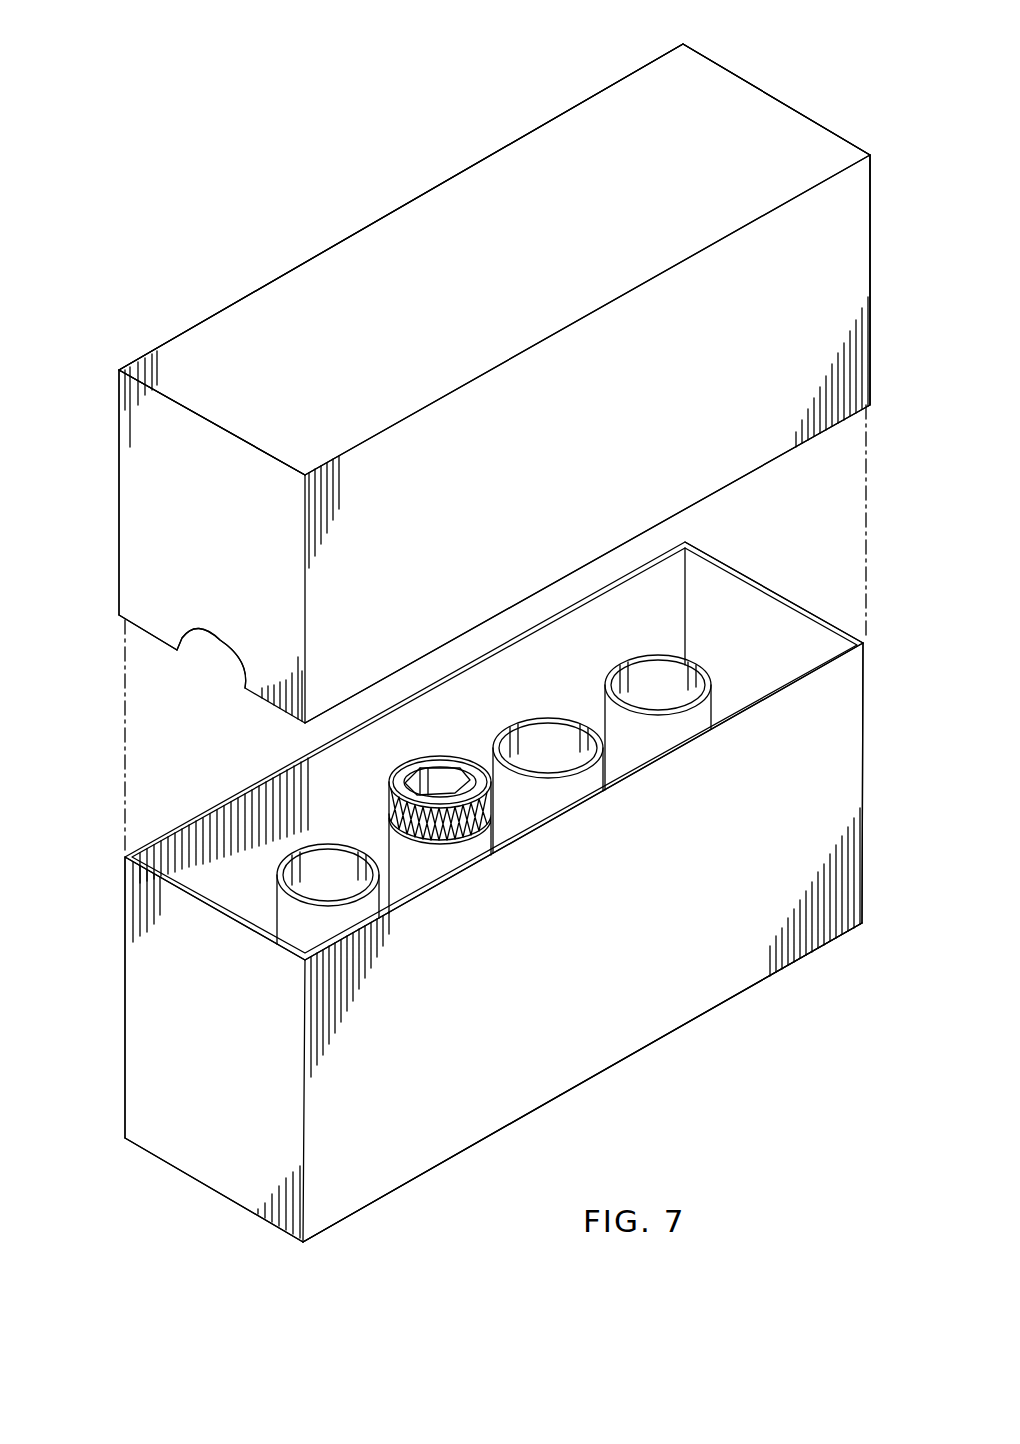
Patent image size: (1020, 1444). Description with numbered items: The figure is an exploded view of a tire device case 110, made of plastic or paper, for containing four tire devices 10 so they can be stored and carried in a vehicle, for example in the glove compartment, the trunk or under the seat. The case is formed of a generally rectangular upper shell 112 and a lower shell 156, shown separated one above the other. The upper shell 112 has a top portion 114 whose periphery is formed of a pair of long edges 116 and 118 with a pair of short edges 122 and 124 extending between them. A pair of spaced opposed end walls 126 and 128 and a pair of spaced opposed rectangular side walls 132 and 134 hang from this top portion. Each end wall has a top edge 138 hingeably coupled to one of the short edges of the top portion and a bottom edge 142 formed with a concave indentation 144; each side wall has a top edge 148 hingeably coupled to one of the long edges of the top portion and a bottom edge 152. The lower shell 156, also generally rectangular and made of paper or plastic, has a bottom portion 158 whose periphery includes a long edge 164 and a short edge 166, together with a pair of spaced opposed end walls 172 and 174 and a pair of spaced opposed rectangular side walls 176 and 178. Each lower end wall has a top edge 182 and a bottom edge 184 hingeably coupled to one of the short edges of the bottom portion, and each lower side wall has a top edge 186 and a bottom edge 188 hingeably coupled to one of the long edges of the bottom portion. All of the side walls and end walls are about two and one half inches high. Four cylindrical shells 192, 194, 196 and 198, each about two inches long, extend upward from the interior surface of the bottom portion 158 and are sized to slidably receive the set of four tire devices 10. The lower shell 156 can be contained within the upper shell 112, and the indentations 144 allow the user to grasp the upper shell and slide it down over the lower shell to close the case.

The tire device 10 is at (458, 754).
The tire device case 110 is at (405, 132).
The upper shell 112 is at (119, 463).
The top portion 114 is at (327, 305).
The long edge 116 is at (500, 158).
The long edge 118 is at (485, 372).
The short edge 122 is at (212, 420).
The short edge 124 is at (755, 87).
The end wall 126 is at (155, 555).
The end wall 128 is at (870, 226).
The side wall 132 is at (572, 108).
The side wall 134 is at (840, 287).
The top edge 138 is at (168, 400).
The bottom edge 142 is at (147, 645).
The concave indentation 144 is at (221, 641).
The top edge 148 is at (680, 292).
The bottom edge 152 is at (480, 620).
The lower shell 156 is at (860, 687).
The bottom portion 158 is at (433, 1172).
The long edge 164 is at (720, 1007).
The short edge 166 is at (213, 1192).
The end wall 172 is at (162, 1055).
The end wall 174 is at (812, 633).
The side wall 176 is at (670, 567).
The side wall 178 is at (823, 785).
The top edge 182 is at (746, 574).
The bottom edge 184 is at (146, 1148).
The top edge 186 is at (383, 707).
The bottom edge 188 is at (620, 1062).
The cylindrical shell 192 is at (275, 872).
The cylindrical shell 194 is at (388, 826).
The cylindrical shell 196 is at (560, 717).
The cylindrical shell 198 is at (674, 655).